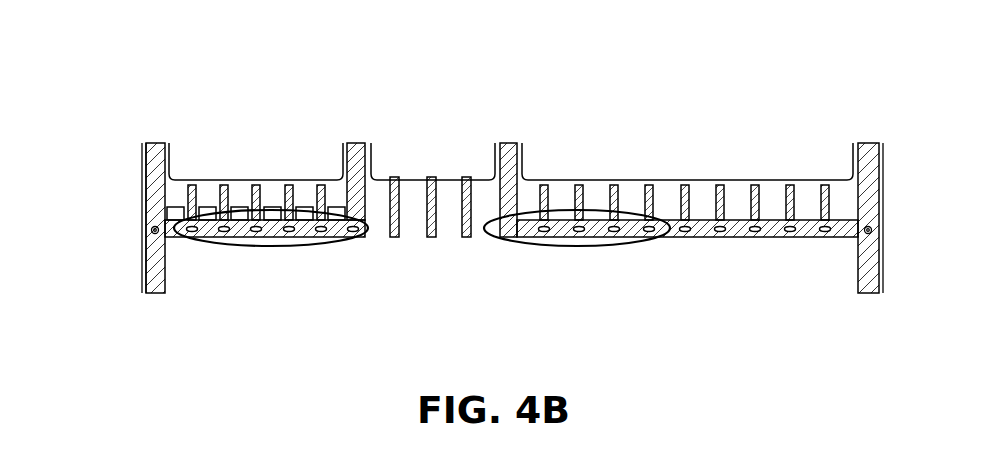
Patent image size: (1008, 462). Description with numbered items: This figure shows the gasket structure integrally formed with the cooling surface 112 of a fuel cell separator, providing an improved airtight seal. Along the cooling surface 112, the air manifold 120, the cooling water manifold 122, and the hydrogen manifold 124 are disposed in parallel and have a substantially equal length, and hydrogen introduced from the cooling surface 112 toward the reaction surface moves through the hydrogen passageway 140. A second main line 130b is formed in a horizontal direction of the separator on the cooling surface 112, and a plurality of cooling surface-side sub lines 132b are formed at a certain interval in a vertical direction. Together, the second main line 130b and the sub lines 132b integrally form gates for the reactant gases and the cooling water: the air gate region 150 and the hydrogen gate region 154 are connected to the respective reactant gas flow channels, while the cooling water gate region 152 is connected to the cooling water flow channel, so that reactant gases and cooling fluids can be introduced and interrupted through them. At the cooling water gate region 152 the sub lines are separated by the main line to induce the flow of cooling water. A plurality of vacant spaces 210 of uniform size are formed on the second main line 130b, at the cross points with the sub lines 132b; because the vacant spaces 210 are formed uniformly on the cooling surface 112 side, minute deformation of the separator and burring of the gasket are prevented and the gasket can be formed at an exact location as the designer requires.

The cooling surface 112 is at (180, 273).
The air manifold 120 is at (675, 155).
The cooling water manifold 122 is at (428, 158).
The hydrogen manifold 124 is at (260, 160).
The cooling surface-side sub line 132b is at (469, 178).
The hydrogen passageway 140 is at (180, 212).
The air gate region 150 is at (858, 237).
The cooling water gate region 152 is at (495, 240).
The hydrogen gate region 154 is at (365, 237).
The second main line 130b is at (537, 247).
The vacant space 210 is at (789, 233).